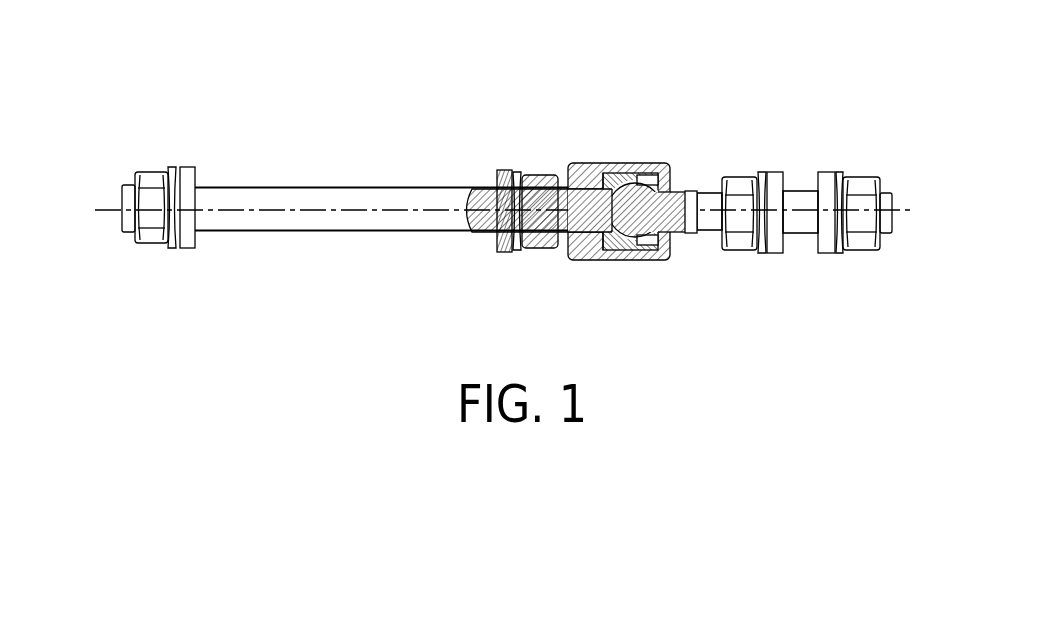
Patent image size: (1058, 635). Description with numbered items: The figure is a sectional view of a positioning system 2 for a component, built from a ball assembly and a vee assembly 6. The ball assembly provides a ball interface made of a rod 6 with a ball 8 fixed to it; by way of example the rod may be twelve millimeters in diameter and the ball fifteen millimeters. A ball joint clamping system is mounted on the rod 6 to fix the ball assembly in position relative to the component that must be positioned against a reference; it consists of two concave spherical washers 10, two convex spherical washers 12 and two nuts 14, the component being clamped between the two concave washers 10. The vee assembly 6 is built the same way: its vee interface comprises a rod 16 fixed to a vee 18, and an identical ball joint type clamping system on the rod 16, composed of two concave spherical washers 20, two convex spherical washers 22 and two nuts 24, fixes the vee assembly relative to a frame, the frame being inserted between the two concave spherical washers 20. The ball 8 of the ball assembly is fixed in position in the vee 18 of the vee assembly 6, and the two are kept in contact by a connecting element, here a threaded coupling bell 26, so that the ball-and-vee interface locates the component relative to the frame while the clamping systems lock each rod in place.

The positioning system 2 is at (527, 130).
The rod 6 is at (310, 187).
The ball 8 is at (642, 262).
The concave spherical washers 10 is at (777, 180).
The convex spherical washers 12 is at (762, 250).
The nuts 14 is at (735, 240).
The rod 16 is at (337, 213).
The vee 18 is at (622, 180).
The concave spherical washers 20 is at (190, 248).
The convex spherical washers 22 is at (175, 248).
The nuts 24 is at (146, 240).
The threaded coupling bell 26 is at (657, 165).